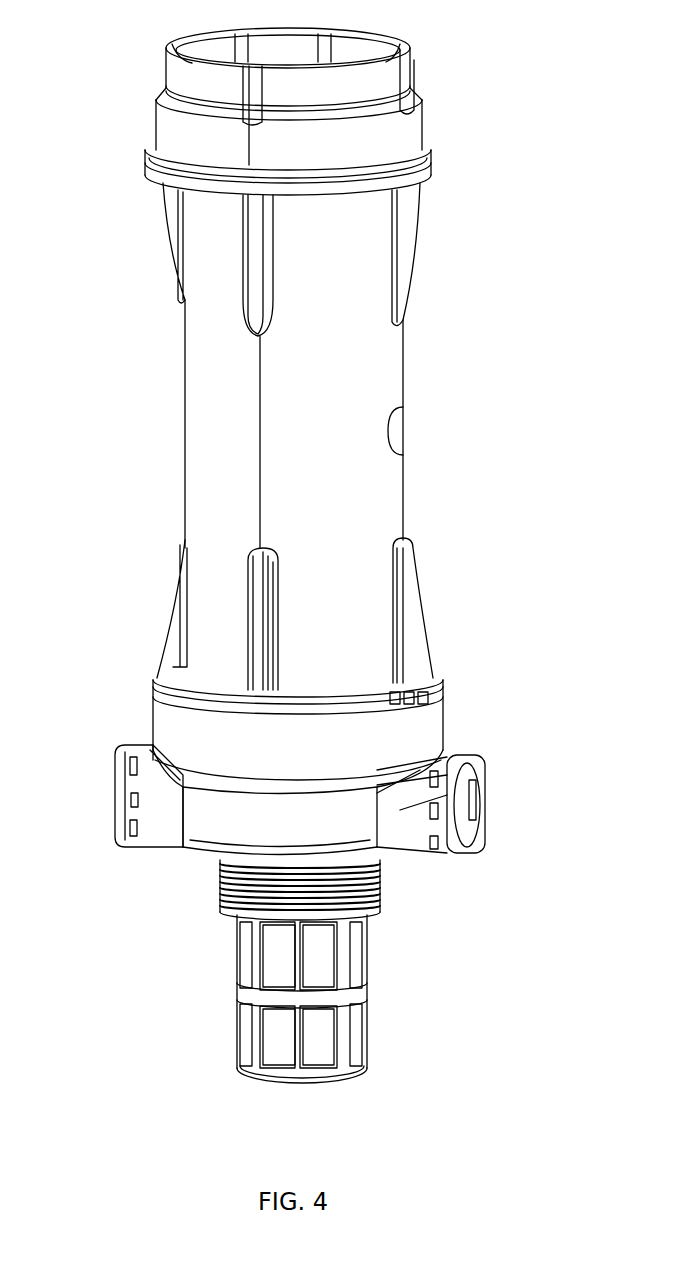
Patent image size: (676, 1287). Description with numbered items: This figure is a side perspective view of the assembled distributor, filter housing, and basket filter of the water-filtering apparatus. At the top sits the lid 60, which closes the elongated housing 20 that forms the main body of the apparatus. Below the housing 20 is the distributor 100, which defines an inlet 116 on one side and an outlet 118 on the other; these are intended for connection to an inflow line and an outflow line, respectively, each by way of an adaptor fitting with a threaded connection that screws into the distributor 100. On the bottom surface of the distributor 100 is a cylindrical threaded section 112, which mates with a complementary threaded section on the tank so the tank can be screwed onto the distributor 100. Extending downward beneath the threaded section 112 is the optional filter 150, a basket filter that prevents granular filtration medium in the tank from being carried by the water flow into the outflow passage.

The lid 60 is at (155, 113).
The housing 20 is at (183, 432).
The distributor 100 is at (153, 718).
The inlet 116 is at (115, 805).
The outlet 118 is at (466, 813).
The cylindrical threaded section 112 is at (220, 888).
The filter 150 is at (237, 990).